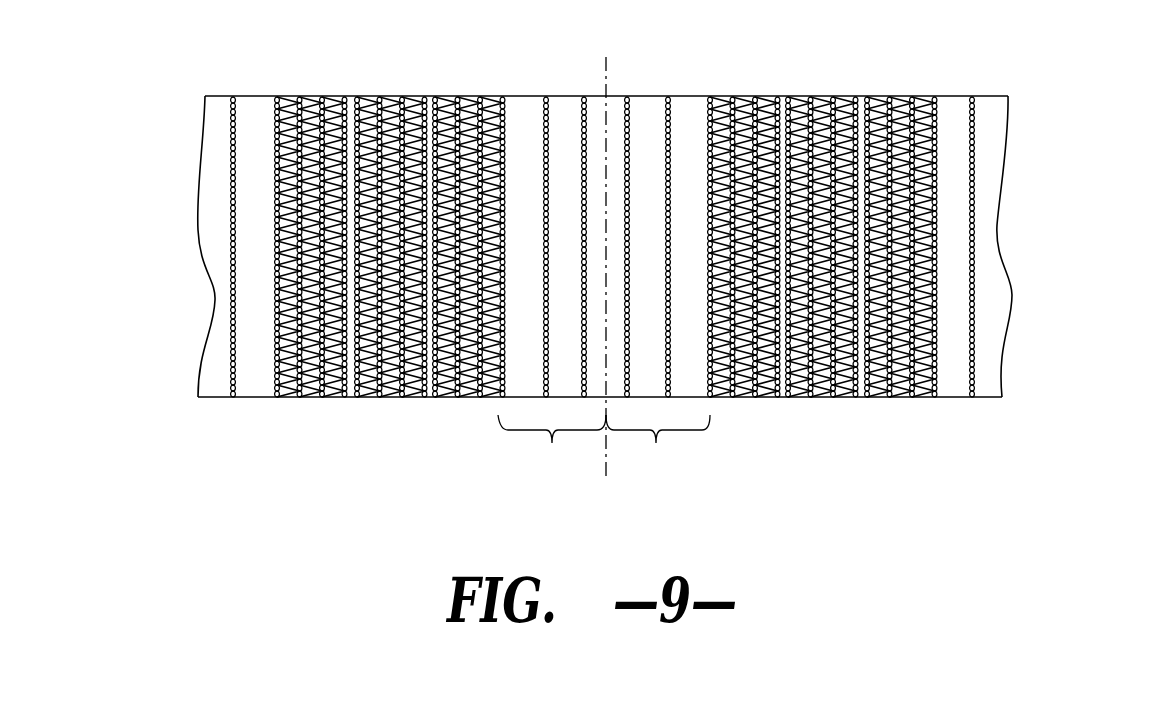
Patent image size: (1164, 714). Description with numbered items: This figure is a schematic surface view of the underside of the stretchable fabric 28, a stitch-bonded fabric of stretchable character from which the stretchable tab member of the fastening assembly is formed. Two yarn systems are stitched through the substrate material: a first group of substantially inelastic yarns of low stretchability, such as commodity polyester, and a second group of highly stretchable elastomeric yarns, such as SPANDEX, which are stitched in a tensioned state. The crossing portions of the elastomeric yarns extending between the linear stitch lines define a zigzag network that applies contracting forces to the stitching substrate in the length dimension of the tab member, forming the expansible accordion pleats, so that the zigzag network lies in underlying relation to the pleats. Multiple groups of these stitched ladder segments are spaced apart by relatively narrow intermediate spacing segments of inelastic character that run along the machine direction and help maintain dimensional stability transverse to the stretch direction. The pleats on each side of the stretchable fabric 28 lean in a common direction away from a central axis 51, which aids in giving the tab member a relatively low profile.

The stretchable fabric 28 is at (1058, 147).
The central axis 51 is at (603, 72).